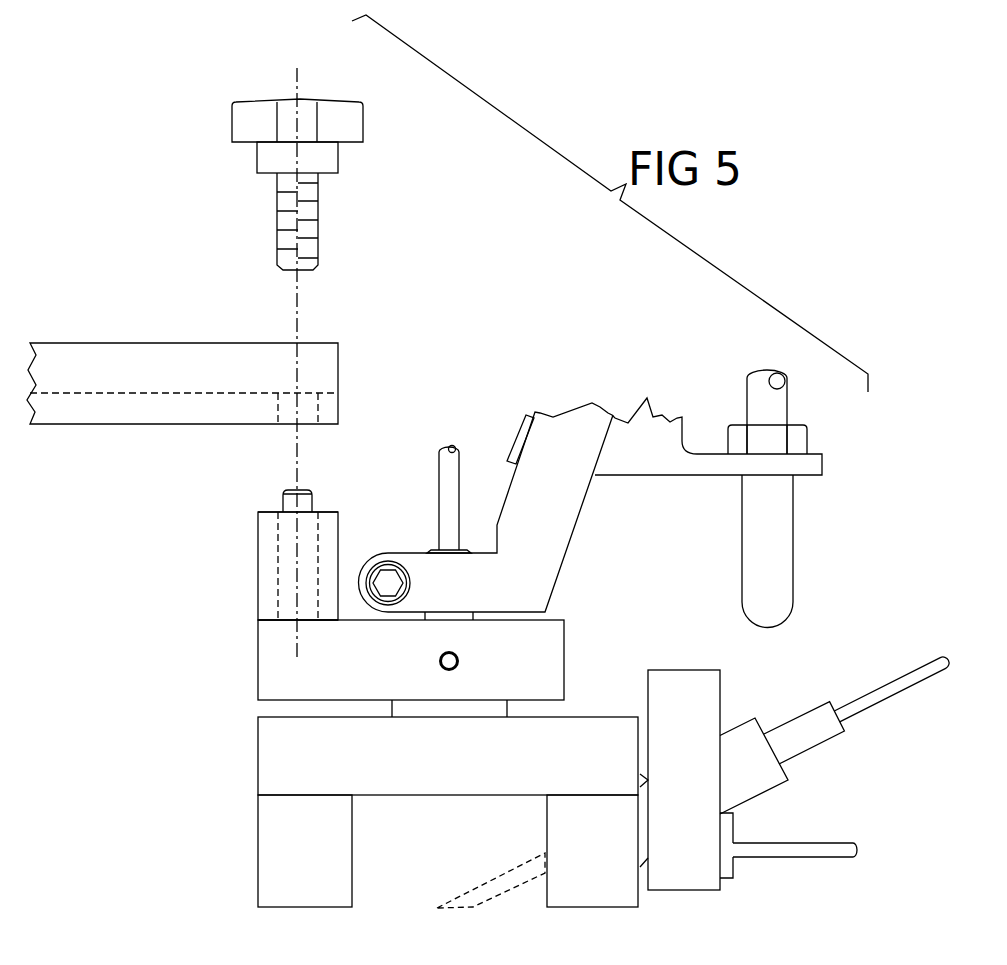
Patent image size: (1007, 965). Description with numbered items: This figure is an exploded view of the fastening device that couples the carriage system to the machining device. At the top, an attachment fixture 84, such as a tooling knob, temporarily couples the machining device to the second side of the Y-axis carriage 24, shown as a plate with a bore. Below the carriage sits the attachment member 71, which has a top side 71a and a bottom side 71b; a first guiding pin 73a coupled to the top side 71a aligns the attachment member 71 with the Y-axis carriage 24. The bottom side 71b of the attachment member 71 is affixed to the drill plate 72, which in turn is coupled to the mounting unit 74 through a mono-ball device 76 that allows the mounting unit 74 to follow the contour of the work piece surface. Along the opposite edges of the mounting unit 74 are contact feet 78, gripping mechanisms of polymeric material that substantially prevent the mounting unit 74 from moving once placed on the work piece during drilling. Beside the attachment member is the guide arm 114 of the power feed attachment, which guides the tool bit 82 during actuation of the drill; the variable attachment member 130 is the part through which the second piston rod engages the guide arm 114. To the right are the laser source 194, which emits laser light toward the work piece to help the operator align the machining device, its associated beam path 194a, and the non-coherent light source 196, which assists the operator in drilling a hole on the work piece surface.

The attachment fixture 84 is at (255, 117).
The Y-axis carriage 24 is at (172, 353).
The attachment member 71 is at (272, 558).
The top side 71a is at (272, 512).
The bottom side 71b is at (273, 618).
The first guiding pin 73a is at (293, 503).
The drill plate 72 is at (272, 687).
The mono-ball device 76 is at (497, 709).
The mounting unit 74 is at (238, 768).
The contact feet 78 is at (278, 875).
The pivoting member 194a is at (491, 872).
The guide arm 114 is at (543, 580).
The tool bit 82 is at (448, 477).
The variable attachment member 130 is at (703, 467).
The laser source 194 is at (763, 775).
The non-coherent light source 196 is at (733, 867).